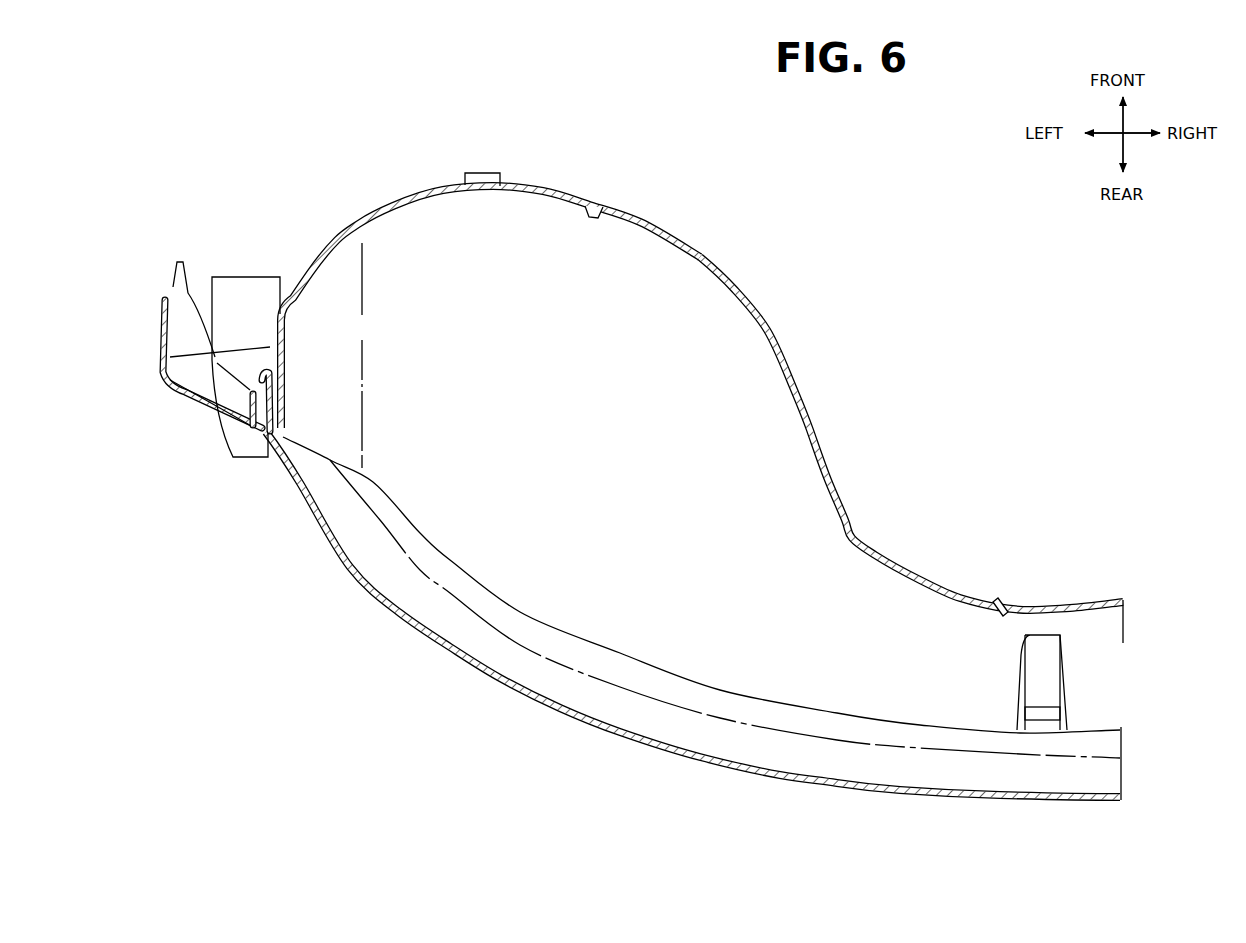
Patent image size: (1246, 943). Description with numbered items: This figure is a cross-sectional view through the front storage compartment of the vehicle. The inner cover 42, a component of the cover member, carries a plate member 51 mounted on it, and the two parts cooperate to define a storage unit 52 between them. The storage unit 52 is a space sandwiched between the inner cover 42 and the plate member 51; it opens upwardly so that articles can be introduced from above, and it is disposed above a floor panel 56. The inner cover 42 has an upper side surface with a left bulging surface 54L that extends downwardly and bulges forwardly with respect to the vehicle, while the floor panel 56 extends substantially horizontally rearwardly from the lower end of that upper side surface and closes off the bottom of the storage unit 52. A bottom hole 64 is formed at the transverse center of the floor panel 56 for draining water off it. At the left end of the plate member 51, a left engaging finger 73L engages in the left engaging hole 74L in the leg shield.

The inner cover 42 is at (542, 183).
The plate member 51 is at (502, 696).
The storage unit 52 is at (622, 408).
The left bulging surface 54L is at (601, 204).
The floor panel 56 is at (462, 333).
The bottom hole 64 is at (1027, 713).
The left engaging finger 73L is at (270, 373).
The left engaging hole 74L is at (251, 426).